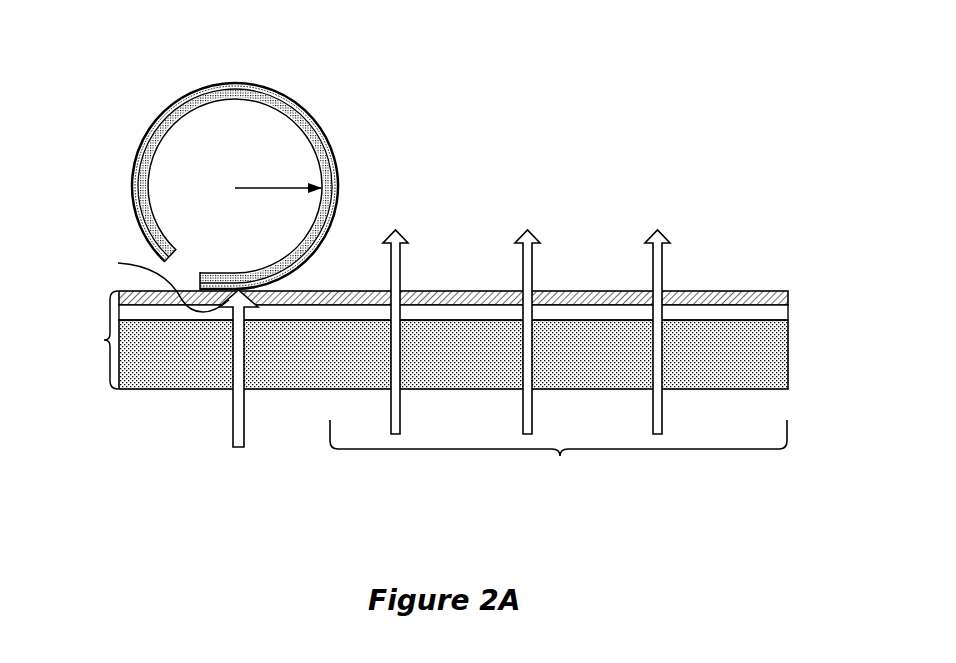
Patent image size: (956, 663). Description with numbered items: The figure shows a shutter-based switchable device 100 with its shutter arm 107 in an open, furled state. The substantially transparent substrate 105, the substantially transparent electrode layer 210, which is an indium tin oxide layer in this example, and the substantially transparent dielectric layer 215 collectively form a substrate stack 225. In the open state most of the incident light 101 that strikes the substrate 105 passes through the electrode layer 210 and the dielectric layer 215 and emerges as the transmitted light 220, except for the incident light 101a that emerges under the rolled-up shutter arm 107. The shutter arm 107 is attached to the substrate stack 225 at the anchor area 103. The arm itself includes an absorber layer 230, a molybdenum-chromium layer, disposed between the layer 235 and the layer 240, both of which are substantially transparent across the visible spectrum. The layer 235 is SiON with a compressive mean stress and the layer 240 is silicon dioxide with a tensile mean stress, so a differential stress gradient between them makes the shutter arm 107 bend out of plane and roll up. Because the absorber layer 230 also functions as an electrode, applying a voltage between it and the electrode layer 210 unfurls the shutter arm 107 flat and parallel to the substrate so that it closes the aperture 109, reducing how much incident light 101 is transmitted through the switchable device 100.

The switchable device 100 is at (132, 503).
The incident light 101 is at (396, 363).
The incident light 101a is at (235, 433).
The anchor area 103 is at (152, 283).
The substantially transparent substrate 105 is at (138, 382).
The shutter arm 107 is at (273, 85).
The aperture 109 is at (558, 453).
The substantially transparent electrode layer 210 is at (773, 313).
The substantially transparent dielectric layer 215 is at (706, 289).
The transmitted light 220 is at (665, 247).
The substrate stack 225 is at (86, 340).
The absorber layer 230 is at (173, 103).
The layer 235 is at (253, 270).
The layer 240 is at (336, 202).